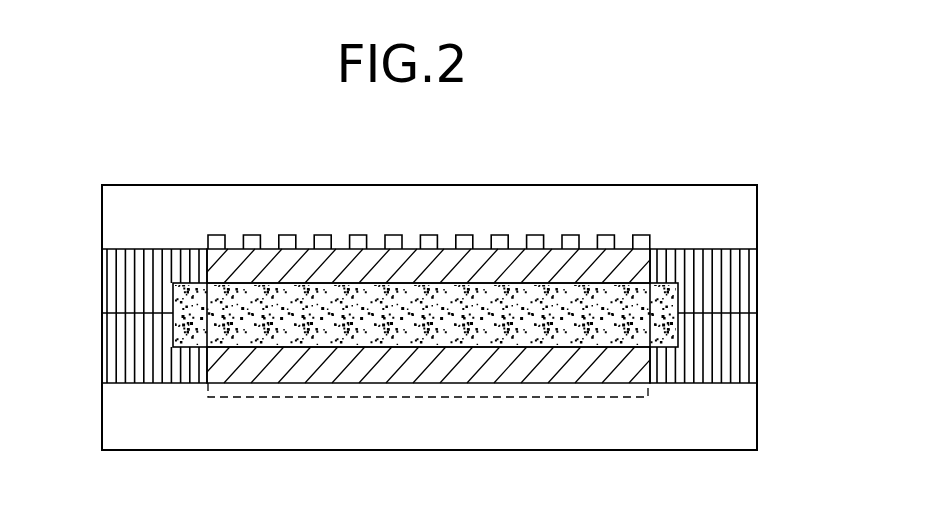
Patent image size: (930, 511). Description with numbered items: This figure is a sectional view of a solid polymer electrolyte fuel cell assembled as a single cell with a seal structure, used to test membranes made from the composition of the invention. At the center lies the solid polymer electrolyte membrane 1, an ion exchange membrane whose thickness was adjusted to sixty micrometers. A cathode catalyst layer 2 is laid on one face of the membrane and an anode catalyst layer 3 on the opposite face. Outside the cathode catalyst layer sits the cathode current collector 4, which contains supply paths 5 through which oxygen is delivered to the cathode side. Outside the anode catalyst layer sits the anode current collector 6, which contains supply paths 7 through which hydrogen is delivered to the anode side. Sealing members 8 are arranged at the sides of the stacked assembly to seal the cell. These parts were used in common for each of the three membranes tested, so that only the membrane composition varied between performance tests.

The solid polymer electrolyte membrane 1 is at (672, 305).
The cathode catalyst layer 2 is at (238, 258).
The anode catalyst layer 3 is at (223, 375).
The cathode current collector 4 is at (422, 200).
The supply paths of oxygen 5 is at (323, 243).
The anode current collector 6 is at (718, 435).
The supply paths of hydrogen 7 is at (390, 400).
The sealing members 8 is at (145, 282).